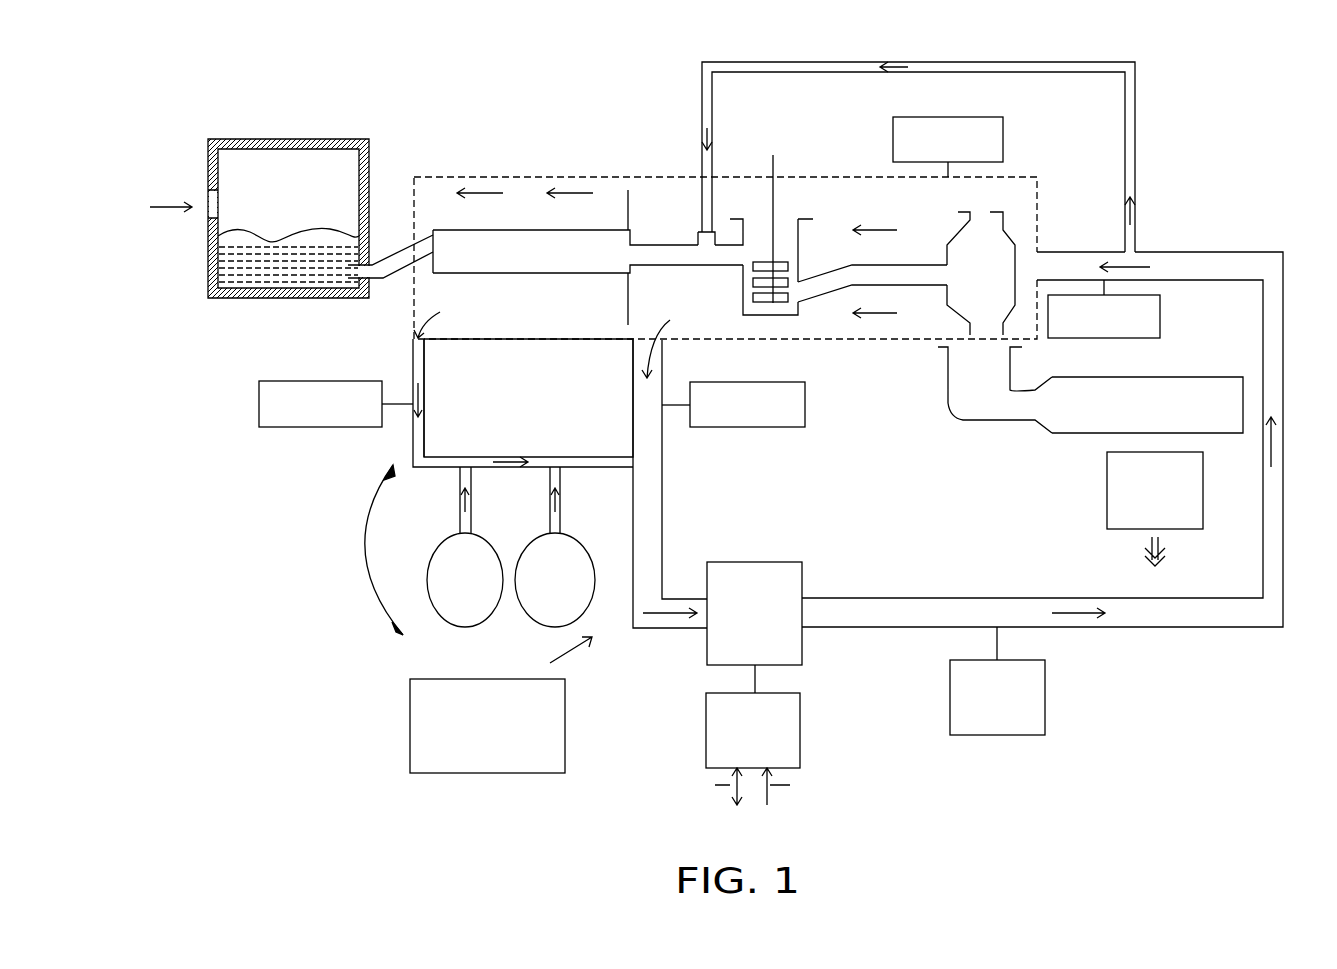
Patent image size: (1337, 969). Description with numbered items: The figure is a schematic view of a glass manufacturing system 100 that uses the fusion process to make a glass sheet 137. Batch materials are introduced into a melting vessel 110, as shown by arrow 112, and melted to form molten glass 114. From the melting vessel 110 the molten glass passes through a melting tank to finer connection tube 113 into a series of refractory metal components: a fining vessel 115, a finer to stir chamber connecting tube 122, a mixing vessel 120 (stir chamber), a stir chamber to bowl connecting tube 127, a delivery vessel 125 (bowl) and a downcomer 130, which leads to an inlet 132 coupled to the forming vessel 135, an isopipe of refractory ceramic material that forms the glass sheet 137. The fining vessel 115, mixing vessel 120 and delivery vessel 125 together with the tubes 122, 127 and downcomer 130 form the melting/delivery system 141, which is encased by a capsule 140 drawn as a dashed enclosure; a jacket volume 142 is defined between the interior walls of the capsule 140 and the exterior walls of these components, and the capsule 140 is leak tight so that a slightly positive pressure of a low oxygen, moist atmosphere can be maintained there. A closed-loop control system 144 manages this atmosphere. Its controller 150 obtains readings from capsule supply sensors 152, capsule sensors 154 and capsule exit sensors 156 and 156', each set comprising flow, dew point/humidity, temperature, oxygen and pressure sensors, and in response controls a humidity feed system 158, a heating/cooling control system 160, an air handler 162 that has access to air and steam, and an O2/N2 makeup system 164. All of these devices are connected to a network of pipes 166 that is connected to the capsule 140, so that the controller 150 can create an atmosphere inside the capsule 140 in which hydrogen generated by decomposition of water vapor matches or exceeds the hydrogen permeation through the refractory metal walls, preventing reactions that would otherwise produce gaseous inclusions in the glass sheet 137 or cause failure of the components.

The glass manufacturing system 100 is at (1247, 58).
The melting vessel 110 is at (290, 139).
The arrow (batch material introduction) 112 is at (152, 207).
The melting tank to finer connection tube 113 is at (392, 270).
The molten glass 114 is at (263, 240).
The fining vessel 115 is at (525, 230).
The mixing vessel 120 is at (752, 316).
The finer to stir chamber connecting tube 122 is at (672, 268).
The delivery vessel 125 is at (962, 242).
The stir chamber to bowl connecting tube 127 is at (884, 265).
The downcomer 130 is at (968, 330).
The inlet 132 is at (947, 385).
The forming vessel 135 is at (1143, 377).
The glass sheet 137 is at (1107, 490).
The capsule 140 is at (470, 177).
The melting/delivery system 141 is at (975, 199).
The jacket volume 142 is at (547, 311).
The closed-loop control system 144 is at (365, 555).
The controller 150 is at (555, 725).
The capsule supply sensors 152 is at (1162, 316).
The capsule sensors 154 is at (1005, 138).
The capsule exit sensors 156 is at (756, 404).
The capsule exit sensors 156' is at (308, 404).
The humidity feed system 158 is at (1047, 697).
The heating/cooling control system 160 is at (803, 728).
The air handler 162 is at (755, 562).
The O2/N2 makeup system 164 is at (527, 641).
The network of pipes 166 is at (1022, 62).